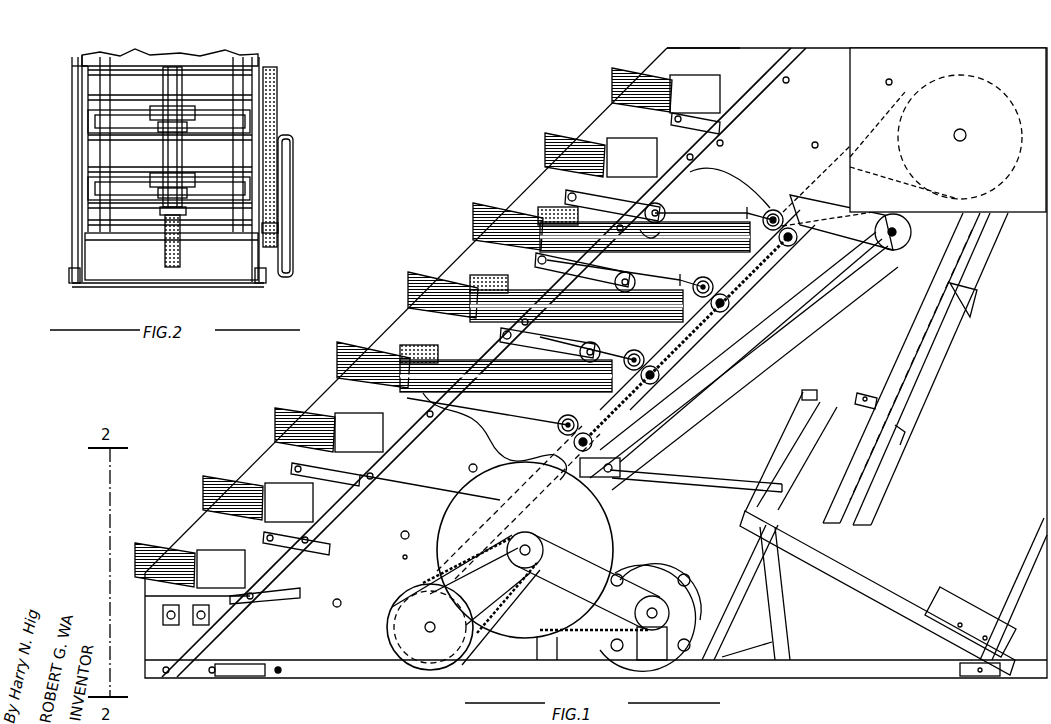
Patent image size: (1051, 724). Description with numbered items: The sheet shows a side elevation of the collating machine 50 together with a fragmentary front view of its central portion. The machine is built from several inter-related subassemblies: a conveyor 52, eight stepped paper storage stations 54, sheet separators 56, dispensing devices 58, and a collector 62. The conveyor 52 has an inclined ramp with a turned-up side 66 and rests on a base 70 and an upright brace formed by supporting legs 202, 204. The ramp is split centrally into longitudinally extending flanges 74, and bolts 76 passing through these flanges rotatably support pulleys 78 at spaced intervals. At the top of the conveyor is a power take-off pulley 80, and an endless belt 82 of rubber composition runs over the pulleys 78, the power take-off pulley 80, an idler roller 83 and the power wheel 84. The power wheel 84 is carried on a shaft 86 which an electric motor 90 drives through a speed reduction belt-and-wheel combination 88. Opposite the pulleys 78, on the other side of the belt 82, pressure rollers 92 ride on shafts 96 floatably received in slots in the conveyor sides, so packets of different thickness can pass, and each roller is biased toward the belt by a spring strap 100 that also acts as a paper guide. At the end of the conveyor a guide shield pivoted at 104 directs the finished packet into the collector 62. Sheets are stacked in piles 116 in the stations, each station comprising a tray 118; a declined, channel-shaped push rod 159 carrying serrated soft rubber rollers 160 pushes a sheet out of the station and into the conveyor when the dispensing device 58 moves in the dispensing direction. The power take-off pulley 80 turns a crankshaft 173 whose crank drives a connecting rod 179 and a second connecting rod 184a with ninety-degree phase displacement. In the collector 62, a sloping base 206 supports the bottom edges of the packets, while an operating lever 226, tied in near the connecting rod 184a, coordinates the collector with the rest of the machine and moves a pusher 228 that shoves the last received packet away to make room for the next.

In FIG. 2, the collating machine 50 is at (70, 196).
In FIG. 1, the collating machine 50 is at (386, 315).
In FIG. 1, the conveyor 52 is at (300, 648).
In FIG. 1, the paper storage stations 54 is at (606, 86).
In FIG. 1, the sheet separators 56 is at (710, 80).
In FIG. 2, the dispensing devices 58 is at (172, 90).
In FIG. 1, the dispensing devices 58 is at (566, 198).
In FIG. 1, the collector 62 is at (901, 489).
In FIG. 1, the side 66 is at (338, 648).
In FIG. 1, the base 70 is at (826, 672).
In FIG. 1, the flanges 74 is at (612, 404).
In FIG. 1, the bolts 76 is at (797, 238).
In FIG. 1, the pulleys 78 is at (790, 246).
In FIG. 1, the power take-off pulley 80 is at (1000, 92).
In FIG. 2, the endless belt 82 is at (182, 240).
In FIG. 1, the endless belt 82 is at (655, 437).
In FIG. 1, the idler roller 83 is at (912, 233).
In FIG. 2, the power wheel 84 is at (165, 235).
In FIG. 1, the power wheel 84 is at (470, 606).
In FIG. 2, the shaft 86 is at (122, 240).
In FIG. 1, the shaft 86 is at (430, 632).
In FIG. 2, the speed reduction belt-and-wheel combination 88 is at (295, 196).
In FIG. 1, the speed reduction belt-and-wheel combination 88 is at (468, 641).
In FIG. 1, the electric motor 90 is at (665, 565).
In FIG. 1, the pressure rollers 92 is at (772, 208).
In FIG. 2, the shafts 96 is at (158, 162).
In FIG. 1, the shafts 96 is at (780, 210).
In FIG. 2, the spring strap 100 is at (105, 75).
In FIG. 1, the spring strap 100 is at (720, 208).
In FIG. 1, the pivot 104 is at (890, 80).
In FIG. 1, the piles 116 is at (618, 70).
In FIG. 1, the tray 118 is at (740, 52).
In FIG. 2, the push rod 159 is at (178, 100).
In FIG. 2, the serrated soft rubber rollers 160 is at (160, 108).
In FIG. 1, the crankshaft 173 is at (960, 128).
In FIG. 1, the connecting rod 179 is at (728, 362).
In FIG. 1, the second connecting rod 184a is at (870, 250).
In FIG. 1, the supporting leg 202 is at (880, 346).
In FIG. 1, the supporting leg 204 is at (929, 369).
In FIG. 1, the sloping base 206 is at (860, 580).
In FIG. 1, the operating lever 226 is at (732, 480).
In FIG. 1, the pusher 228 is at (908, 436).